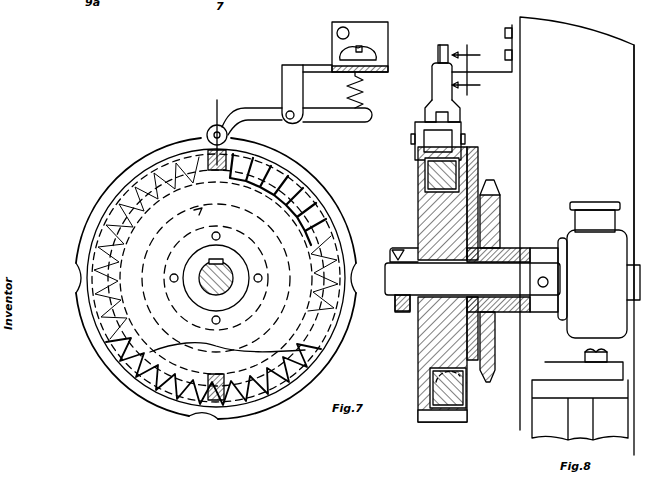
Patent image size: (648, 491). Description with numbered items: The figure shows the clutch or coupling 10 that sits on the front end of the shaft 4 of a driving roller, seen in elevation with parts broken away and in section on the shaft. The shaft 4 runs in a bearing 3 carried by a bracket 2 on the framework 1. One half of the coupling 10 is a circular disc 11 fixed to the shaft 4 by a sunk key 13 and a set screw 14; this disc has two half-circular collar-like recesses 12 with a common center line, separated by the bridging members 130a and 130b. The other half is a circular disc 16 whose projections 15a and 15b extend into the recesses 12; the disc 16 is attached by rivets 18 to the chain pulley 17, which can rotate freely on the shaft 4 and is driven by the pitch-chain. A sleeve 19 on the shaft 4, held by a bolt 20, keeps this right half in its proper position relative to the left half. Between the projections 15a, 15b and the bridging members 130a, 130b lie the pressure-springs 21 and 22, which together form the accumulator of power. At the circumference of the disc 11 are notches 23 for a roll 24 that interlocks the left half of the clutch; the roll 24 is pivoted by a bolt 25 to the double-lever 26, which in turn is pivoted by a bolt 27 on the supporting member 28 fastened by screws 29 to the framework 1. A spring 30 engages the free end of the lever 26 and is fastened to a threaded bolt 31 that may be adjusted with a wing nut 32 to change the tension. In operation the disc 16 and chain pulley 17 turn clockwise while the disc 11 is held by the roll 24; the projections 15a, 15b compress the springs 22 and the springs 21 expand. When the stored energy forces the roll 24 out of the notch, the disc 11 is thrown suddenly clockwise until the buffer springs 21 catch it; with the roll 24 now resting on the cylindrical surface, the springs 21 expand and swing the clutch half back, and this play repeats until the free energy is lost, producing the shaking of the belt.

In FIG. 8, the framework 1 is at (632, 132).
In FIG. 8, the bracket 2 is at (532, 424).
In FIG. 8, the bearing 3 is at (572, 326).
In FIG. 8, the shaft 4 is at (396, 292).
In FIG. 8, the coupling 10 is at (437, 203).
In FIG. 7, the circular disc 11 is at (98, 338).
In FIG. 8, the circular disc 11 is at (426, 334).
In FIG. 8, the recesses 12 is at (428, 392).
In FIG. 7, the sunk key 13 is at (226, 262).
In FIG. 8, the sunk key 13 is at (394, 252).
In FIG. 8, the set screw 14 is at (402, 311).
In FIG. 7, the projection 15a is at (223, 129).
In FIG. 8, the projection 15a is at (428, 172).
In FIG. 7, the projection 15b is at (208, 400).
In FIG. 8, the projection 15b is at (462, 406).
In FIG. 7, the circular disc 16 is at (322, 340).
In FIG. 8, the circular disc 16 is at (462, 392).
In FIG. 7, the chain pulley 17 is at (300, 214).
In FIG. 8, the chain pulley 17 is at (494, 350).
In FIG. 8, the rivets 18 is at (496, 244).
In FIG. 8, the sleeve 19 is at (542, 250).
In FIG. 8, the bolt 20 is at (542, 288).
In FIG. 7, the pressure-springs 21 is at (128, 204).
In FIG. 7, the pressure-springs 22 is at (262, 230).
In FIG. 7, the notches 23 is at (222, 416).
In FIG. 7, the roll 24 is at (210, 128).
In FIG. 8, the roll 24 is at (420, 142).
In FIG. 7, the bolt 25 is at (228, 135).
In FIG. 8, the bolt 25 is at (466, 138).
In FIG. 7, the double-lever 26 is at (318, 118).
In FIG. 8, the double-lever 26 is at (460, 116).
In FIG. 7, the bolt 27 is at (290, 119).
In FIG. 8, the bolt 27 is at (425, 116).
In FIG. 7, the supporting member 28 is at (296, 100).
In FIG. 8, the supporting member 28 is at (446, 96).
In FIG. 8, the screws 29 is at (508, 54).
In FIG. 7, the spring 30 is at (364, 92).
In FIG. 7, the threaded bolt 31 is at (338, 36).
In FIG. 7, the wing nut 32 is at (366, 46).
In FIG. 8, the wing nut 32 is at (438, 52).
In FIG. 7, the bridging member 130a is at (86, 272).
In FIG. 7, the bridging member 130b is at (350, 278).